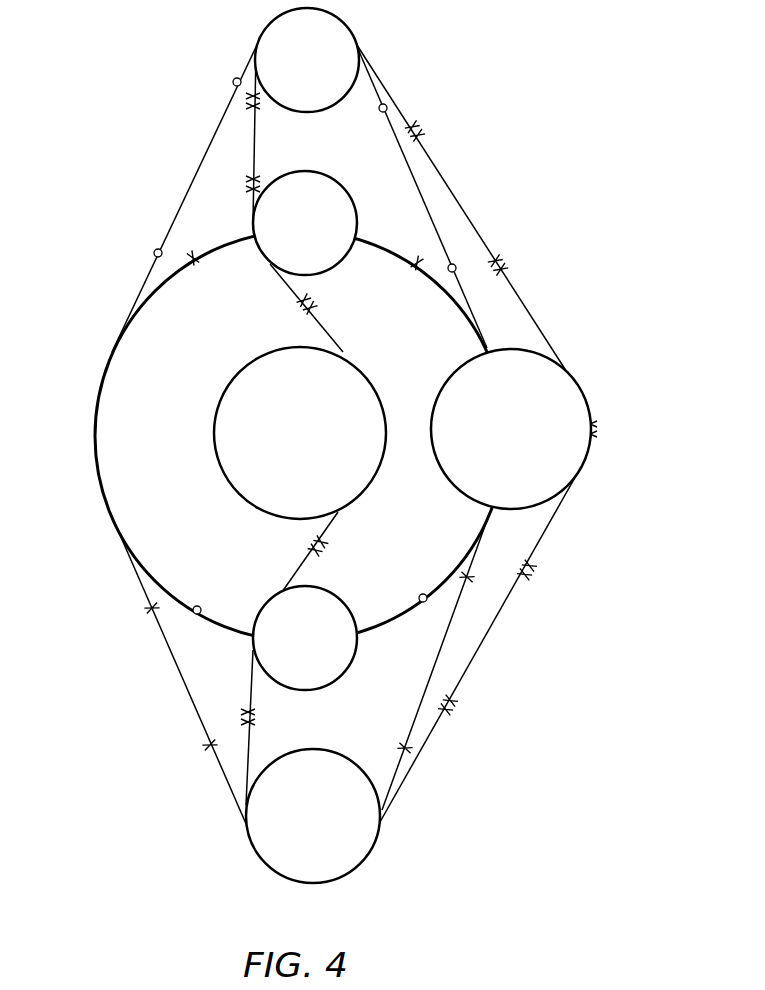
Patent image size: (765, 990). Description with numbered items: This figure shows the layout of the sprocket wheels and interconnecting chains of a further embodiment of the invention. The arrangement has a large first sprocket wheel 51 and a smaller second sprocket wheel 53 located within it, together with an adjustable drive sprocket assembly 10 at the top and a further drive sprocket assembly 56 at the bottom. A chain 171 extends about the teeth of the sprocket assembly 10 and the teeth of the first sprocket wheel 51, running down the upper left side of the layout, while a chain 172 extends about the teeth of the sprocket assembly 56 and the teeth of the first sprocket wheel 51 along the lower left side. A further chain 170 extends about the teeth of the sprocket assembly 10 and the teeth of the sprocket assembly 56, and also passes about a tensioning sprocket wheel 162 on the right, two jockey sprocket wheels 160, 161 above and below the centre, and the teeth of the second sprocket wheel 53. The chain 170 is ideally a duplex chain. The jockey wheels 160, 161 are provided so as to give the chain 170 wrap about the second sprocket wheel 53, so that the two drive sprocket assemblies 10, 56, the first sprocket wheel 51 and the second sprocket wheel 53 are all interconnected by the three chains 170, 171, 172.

The adjustable drive sprocket assembly 10 is at (320, 74).
The first sprocket wheel 51 is at (169, 454).
The second sprocket wheel 53 is at (321, 454).
The further drive sprocket assembly 56 is at (373, 851).
The jockey sprocket wheel 160 is at (336, 236).
The jockey sprocket wheel 161 is at (325, 659).
The tensioning sprocket wheel 162 is at (537, 448).
The further chain 170 is at (523, 296).
The chain 171 is at (193, 172).
The chain 172 is at (178, 675).